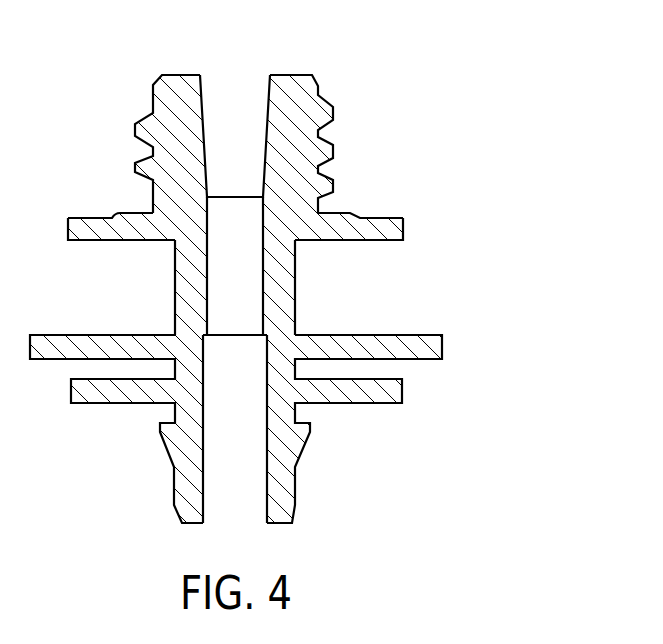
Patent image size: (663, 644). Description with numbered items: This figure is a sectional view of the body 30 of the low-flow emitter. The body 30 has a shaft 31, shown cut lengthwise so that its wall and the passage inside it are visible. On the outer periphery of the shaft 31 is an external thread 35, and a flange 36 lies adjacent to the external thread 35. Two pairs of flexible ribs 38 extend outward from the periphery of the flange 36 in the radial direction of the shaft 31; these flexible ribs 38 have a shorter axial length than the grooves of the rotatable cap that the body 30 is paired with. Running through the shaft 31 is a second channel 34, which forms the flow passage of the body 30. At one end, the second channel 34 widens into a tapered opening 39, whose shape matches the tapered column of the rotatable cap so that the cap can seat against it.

The body 30 is at (437, 453).
The shaft 31 is at (290, 289).
The second channel 34 is at (243, 493).
The external thread 35 is at (325, 112).
The flange 36 is at (343, 216).
The flexible ribs 38 is at (383, 230).
The tapered opening 39 is at (238, 117).